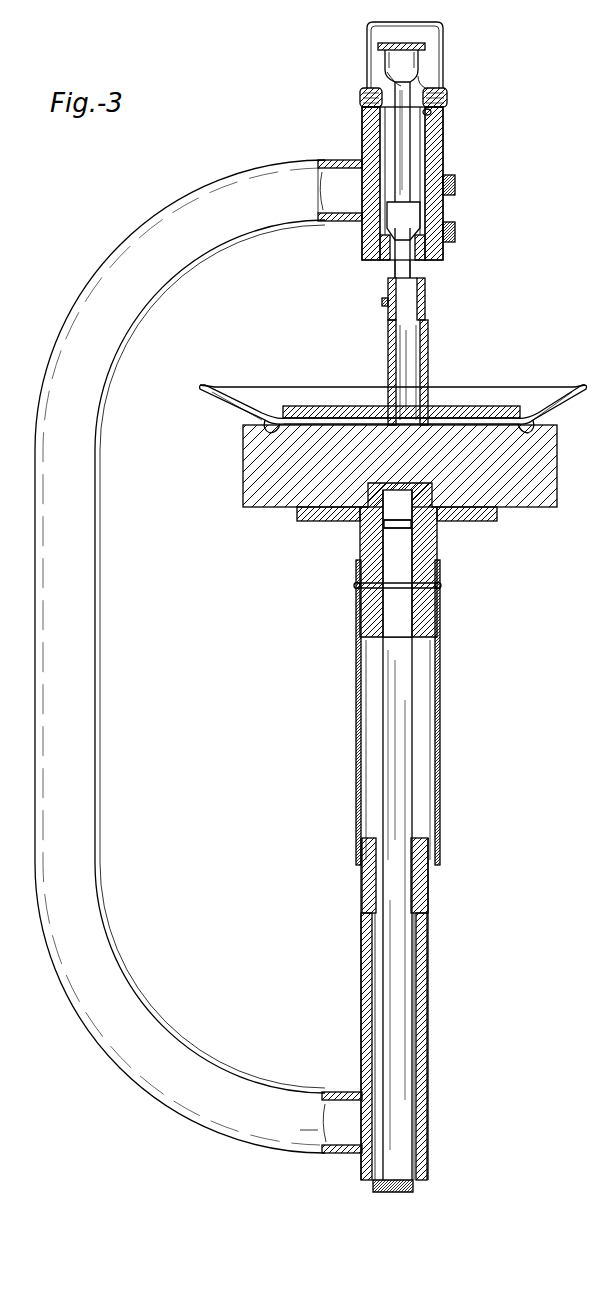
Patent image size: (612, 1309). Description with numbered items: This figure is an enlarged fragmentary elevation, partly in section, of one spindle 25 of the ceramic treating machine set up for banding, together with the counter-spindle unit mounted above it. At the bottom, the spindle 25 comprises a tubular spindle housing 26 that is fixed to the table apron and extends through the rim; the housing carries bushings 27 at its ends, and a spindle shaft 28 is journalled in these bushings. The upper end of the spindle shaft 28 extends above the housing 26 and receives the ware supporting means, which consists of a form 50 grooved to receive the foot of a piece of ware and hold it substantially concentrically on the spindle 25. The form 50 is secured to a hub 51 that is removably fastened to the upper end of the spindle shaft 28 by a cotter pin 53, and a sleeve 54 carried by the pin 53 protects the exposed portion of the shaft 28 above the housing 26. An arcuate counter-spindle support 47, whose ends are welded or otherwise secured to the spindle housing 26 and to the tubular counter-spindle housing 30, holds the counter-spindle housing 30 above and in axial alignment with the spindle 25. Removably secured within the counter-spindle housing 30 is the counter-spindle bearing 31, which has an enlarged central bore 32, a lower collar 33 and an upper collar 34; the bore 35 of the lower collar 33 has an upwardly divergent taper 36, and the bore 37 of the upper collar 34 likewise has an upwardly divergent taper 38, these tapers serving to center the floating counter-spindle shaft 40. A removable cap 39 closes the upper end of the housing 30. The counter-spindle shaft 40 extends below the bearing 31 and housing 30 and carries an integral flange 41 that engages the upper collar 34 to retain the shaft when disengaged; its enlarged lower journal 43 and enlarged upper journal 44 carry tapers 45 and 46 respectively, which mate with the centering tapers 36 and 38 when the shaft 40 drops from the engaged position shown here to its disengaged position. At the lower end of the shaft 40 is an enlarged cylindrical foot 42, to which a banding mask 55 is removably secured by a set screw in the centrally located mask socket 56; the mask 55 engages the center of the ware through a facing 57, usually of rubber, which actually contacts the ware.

The spindle 25 is at (350, 893).
The tubular spindle housing 26 is at (427, 952).
The bushing 27 is at (416, 894).
The spindle shaft 28 is at (400, 796).
The tubular counter-spindle housing 30 is at (362, 155).
The counter-spindle bearing 31 is at (366, 118).
The enlarged central bore 32 is at (425, 134).
The lower collar 33 is at (378, 262).
The upper collar 34 is at (372, 92).
The bore of the lower collar 35 is at (418, 263).
The upwardly divergent taper 36 is at (365, 233).
The bore of the upper collar 37 is at (431, 112).
The upwardly divergent taper 38 is at (425, 80).
The removable cap 39 is at (443, 30).
The counter-spindle shaft 40 is at (403, 158).
The integral flange 41 is at (390, 46).
The enlarged cylindrical foot 42 is at (410, 296).
The enlarged lower journal 43 is at (410, 212).
The enlarged upper journal 44 is at (388, 58).
The taper 45 is at (443, 230).
The taper 46 is at (400, 78).
The arcuate counter-spindle support 47 is at (78, 678).
The form 50 is at (556, 470).
The hub 51 is at (422, 554).
The cotter pin 53 is at (441, 587).
The sleeve 54 is at (441, 668).
The banding mask 55 is at (485, 405).
The mask socket 56 is at (428, 345).
The facing 57 is at (310, 405).